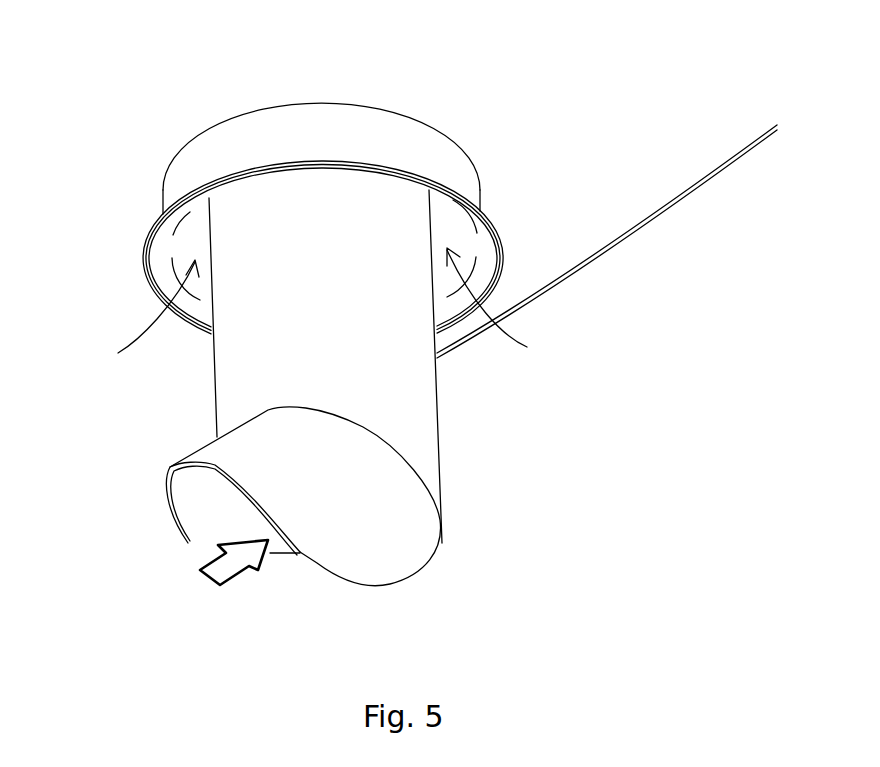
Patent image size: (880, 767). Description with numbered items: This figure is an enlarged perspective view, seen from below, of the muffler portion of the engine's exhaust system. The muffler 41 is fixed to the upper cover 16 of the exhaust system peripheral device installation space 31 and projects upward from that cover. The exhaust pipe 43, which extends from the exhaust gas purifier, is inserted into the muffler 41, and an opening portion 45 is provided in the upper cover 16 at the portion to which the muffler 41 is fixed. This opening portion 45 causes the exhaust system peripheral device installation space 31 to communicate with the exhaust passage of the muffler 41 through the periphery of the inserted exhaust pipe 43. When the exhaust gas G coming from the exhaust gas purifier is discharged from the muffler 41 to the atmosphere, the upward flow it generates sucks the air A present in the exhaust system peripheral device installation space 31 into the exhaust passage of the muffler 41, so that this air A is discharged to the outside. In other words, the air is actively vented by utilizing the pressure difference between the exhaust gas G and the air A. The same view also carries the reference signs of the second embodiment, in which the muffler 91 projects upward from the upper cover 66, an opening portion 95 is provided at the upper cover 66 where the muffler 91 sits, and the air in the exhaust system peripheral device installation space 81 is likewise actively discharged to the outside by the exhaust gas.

The upper cover 16 is at (513, 38).
The upper cover 66 is at (371, 303).
The muffler 41 is at (232, 152).
The muffler 91 is at (301, 117).
The opening portion 45 is at (447, 223).
The opening portion 95 is at (428, 251).
The exhaust pipe 43 is at (413, 405).
The exhaust system peripheral device installation space 31 is at (63, 523).
The exhaust system peripheral device installation space 81 is at (40, 556).
The air A is at (152, 333).
The exhaust gas G is at (257, 558).